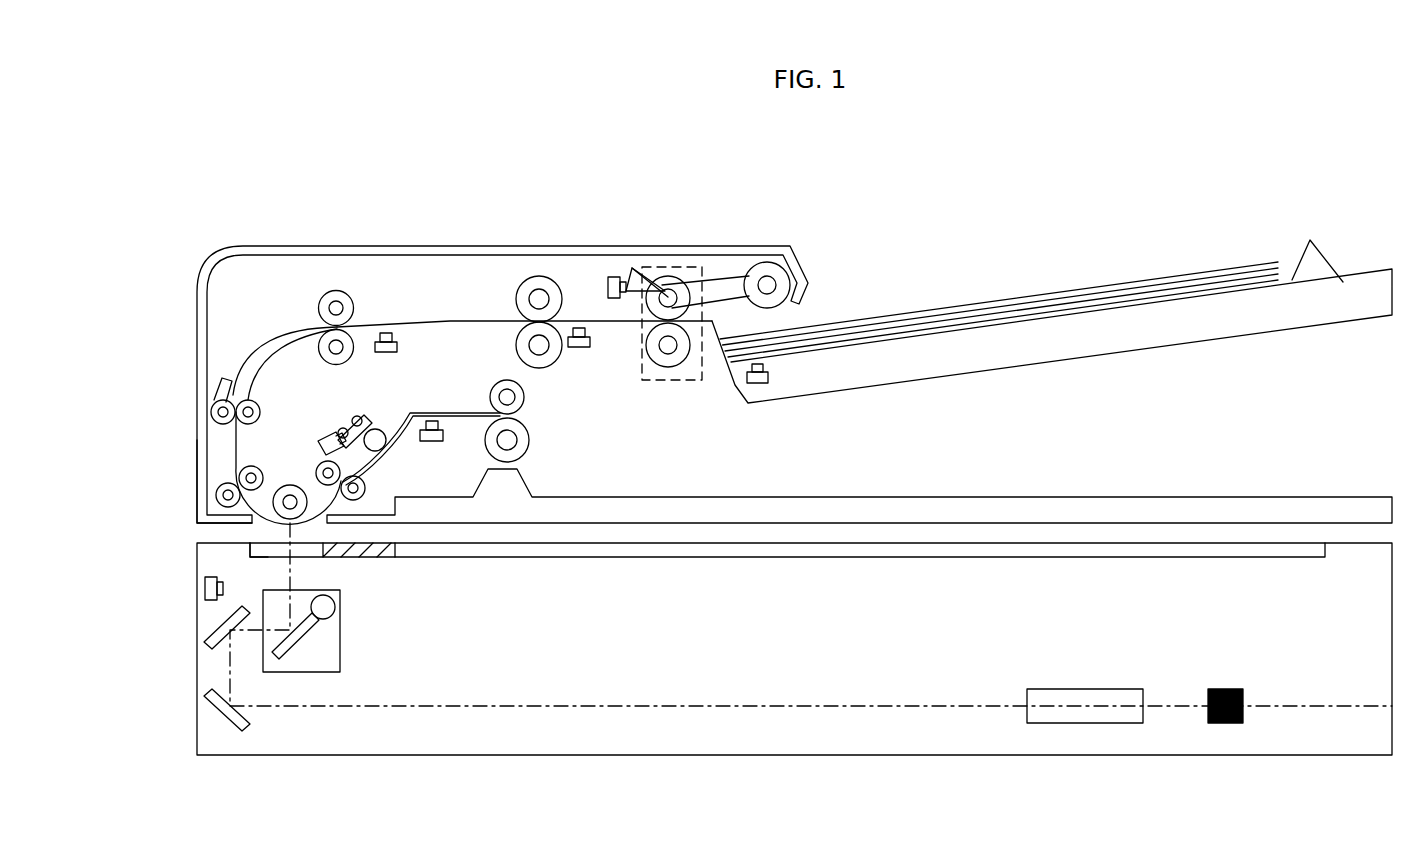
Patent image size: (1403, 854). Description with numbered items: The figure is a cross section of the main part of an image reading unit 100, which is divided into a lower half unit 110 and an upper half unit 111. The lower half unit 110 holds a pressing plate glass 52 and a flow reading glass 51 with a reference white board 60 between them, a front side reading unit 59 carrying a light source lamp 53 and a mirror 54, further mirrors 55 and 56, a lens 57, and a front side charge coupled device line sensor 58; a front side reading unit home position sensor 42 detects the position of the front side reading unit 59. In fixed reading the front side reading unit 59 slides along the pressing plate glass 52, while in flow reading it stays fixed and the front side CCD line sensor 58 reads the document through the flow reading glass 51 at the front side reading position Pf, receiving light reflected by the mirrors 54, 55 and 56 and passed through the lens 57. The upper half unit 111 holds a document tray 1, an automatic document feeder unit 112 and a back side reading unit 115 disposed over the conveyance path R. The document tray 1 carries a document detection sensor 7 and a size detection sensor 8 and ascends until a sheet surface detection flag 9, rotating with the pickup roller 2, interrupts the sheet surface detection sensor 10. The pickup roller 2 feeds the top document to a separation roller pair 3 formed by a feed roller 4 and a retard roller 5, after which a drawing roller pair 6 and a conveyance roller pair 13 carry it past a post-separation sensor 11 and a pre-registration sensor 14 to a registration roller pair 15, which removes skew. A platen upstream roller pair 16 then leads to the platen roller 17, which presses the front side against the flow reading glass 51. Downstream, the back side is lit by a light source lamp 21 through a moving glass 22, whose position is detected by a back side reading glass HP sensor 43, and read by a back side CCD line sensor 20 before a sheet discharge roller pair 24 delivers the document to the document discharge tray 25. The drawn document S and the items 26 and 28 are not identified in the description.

The image reading unit 100 is at (185, 183).
The automatic document feeder (ADF) unit 112 is at (298, 310).
The upper half unit 111 is at (182, 446).
The conveyance roller pair 13 is at (353, 305).
The sensor 28 is at (398, 348).
The drawing roller pair 6 is at (515, 297).
The post-separation sensor 11 is at (590, 348).
The sheet surface detection sensor 10 is at (614, 276).
The sheet surface detection flag 9 is at (633, 267).
The separation roller pair 3 is at (650, 384).
The feed roller 4 is at (674, 289).
The retard roller 5 is at (676, 360).
The arm 26 is at (718, 279).
The pickup roller 2 is at (767, 262).
The document detection sensor 7 is at (769, 378).
The document tray 1 is at (1130, 348).
The sheet S is at (1095, 290).
The size detection sensor 8 is at (1320, 256).
The pre-registration sensor 14 is at (214, 380).
The registration roller pair 15 is at (253, 404).
The back side reading unit 115 is at (326, 418).
The back side CCD line sensor 20 is at (348, 424).
The light source lamp 21 is at (362, 418).
The moving glass 22 is at (382, 428).
The back side reading glass HP sensor 43 is at (318, 444).
The conveyance path R is at (316, 482).
The platen roller 17 is at (288, 485).
The platen upstream roller pair 16 is at (216, 495).
The sheet discharge roller pair 24 is at (526, 400).
The document discharge tray 25 is at (845, 497).
The lower half unit 110 is at (176, 676).
The pressing plate glass 52 is at (560, 558).
The reference white board 60 is at (375, 558).
The flow reading glass 51 is at (268, 559).
The front side reading position Pf is at (292, 576).
The front side reading unit home position (HP) sensor 42 is at (204, 588).
The mirror 55 is at (213, 631).
The mirror 56 is at (212, 712).
The front side reading unit 59 is at (342, 660).
The light source lamp 53 is at (336, 616).
The mirror 54 is at (300, 656).
The lens 57 is at (1090, 689).
The front side CCD line sensor 58 is at (1225, 689).